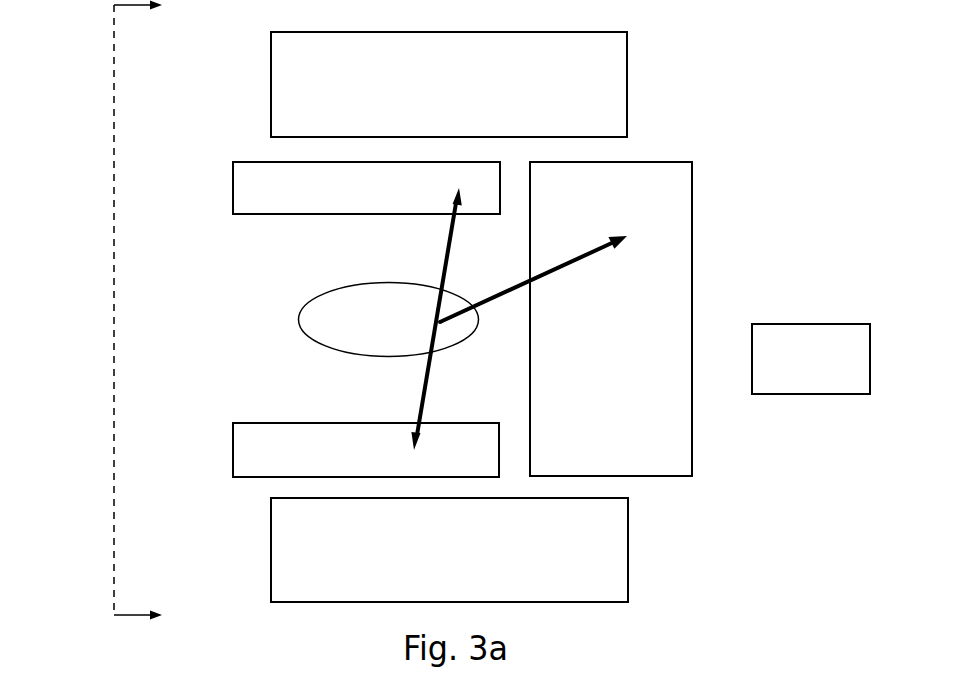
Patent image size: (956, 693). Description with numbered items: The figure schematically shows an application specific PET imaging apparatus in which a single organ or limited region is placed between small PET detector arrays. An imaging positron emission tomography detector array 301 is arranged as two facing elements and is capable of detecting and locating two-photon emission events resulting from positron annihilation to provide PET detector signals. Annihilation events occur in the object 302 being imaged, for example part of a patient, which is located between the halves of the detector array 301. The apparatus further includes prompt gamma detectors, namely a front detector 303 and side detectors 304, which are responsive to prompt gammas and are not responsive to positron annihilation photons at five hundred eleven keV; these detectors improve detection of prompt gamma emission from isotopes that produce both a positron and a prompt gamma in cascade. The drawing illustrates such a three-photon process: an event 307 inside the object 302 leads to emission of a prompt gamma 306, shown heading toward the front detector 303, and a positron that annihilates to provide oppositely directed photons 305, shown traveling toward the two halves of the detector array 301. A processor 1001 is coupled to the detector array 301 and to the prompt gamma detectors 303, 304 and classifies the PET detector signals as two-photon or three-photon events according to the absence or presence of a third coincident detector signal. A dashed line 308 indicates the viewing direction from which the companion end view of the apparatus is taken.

The imaging PET detector array 301 is at (327, 202).
The object 302 is at (394, 334).
The prompt gamma detector 303 is at (638, 334).
The prompt gamma detectors 304 is at (469, 96).
The oppositely directed photons 305 is at (448, 246).
The prompt gamma 306 is at (597, 255).
The event 307 is at (440, 323).
The line 308 is at (112, 589).
The processor 1001 is at (841, 376).